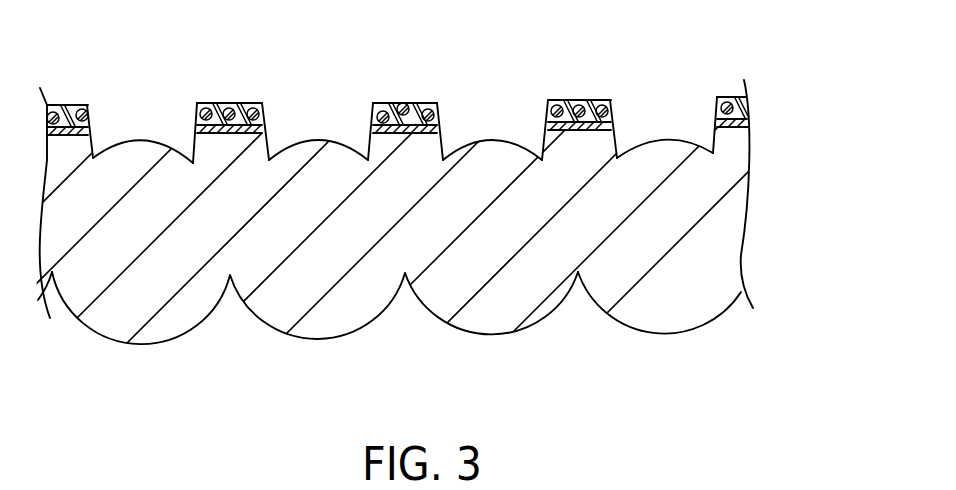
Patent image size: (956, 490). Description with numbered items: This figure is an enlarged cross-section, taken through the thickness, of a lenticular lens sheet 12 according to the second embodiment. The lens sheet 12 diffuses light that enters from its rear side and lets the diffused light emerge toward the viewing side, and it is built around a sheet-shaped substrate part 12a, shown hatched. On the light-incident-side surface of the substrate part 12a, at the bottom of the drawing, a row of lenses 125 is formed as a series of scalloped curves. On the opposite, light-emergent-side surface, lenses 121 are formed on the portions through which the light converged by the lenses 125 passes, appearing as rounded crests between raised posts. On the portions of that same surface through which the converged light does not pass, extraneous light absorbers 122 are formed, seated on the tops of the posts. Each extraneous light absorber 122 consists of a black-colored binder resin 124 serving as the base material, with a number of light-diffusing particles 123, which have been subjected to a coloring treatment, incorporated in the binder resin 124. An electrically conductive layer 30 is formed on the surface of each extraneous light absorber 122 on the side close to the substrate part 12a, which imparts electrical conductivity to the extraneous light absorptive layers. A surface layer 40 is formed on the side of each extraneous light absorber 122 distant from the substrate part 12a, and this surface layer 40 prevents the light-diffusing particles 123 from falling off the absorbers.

The lenticular lens sheet 12 is at (430, 209).
The sheet-shaped substrate part 12a is at (717, 222).
The lenses 121 is at (655, 135).
The lenses 125 is at (662, 337).
The extraneous light absorber 122 is at (363, 65).
The light-diffusing particles 123 is at (393, 84).
The binder resin 124 is at (366, 85).
The surface layer 40 is at (416, 65).
The electrically conductive layer 30 is at (441, 107).